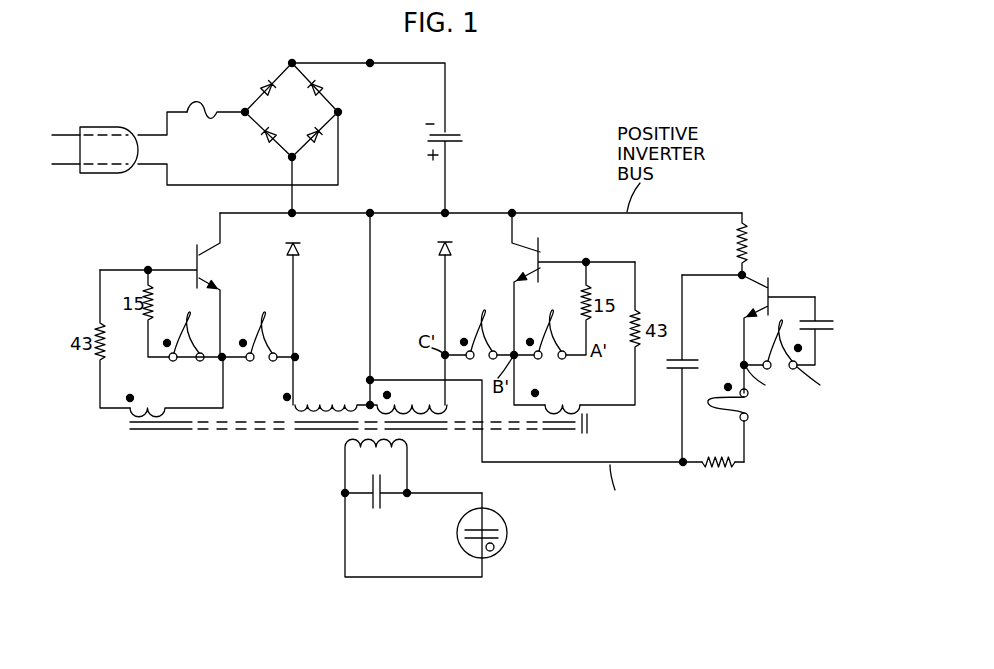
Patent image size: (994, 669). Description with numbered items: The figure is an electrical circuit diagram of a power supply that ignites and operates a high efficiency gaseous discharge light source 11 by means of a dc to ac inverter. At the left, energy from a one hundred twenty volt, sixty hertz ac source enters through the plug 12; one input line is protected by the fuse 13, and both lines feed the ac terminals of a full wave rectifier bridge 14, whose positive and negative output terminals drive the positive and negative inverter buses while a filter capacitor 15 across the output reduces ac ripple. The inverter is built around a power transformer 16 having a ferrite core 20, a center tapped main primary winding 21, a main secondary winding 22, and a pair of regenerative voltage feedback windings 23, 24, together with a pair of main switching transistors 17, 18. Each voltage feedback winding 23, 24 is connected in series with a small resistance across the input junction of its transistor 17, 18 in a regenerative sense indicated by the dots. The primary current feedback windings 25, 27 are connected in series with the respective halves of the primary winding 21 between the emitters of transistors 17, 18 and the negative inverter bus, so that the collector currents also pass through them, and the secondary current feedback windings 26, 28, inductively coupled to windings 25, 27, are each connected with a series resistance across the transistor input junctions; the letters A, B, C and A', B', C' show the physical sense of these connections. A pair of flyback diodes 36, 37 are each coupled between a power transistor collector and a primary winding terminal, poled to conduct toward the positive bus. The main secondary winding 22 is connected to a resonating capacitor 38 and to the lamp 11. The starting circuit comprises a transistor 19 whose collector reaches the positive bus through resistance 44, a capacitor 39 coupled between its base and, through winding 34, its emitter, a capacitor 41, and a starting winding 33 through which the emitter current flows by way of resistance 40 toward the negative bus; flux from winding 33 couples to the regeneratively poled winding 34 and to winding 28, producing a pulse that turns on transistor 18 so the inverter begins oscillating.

The gaseous discharge light source 11 is at (496, 533).
The plug 12 is at (97, 127).
The fuse 13 is at (205, 122).
The full wave rectifier bridge 14 is at (302, 121).
The filter capacitor 15 is at (450, 133).
The power transformer 16 is at (353, 458).
The main switching transistor 17 is at (203, 266).
The main switching transistor 18 is at (537, 262).
The starting transistor 19 is at (766, 297).
The ferrite core 20 is at (150, 431).
The main primary winding 21 is at (293, 408).
The main secondary winding 22 is at (345, 443).
The regenerative voltage feedback winding 23 is at (127, 410).
The regenerative voltage feedback winding 24 is at (565, 408).
The primary current feedback winding 25 is at (262, 330).
The secondary current feedback winding 26 is at (187, 330).
The primary current feedback winding 27 is at (478, 328).
The secondary current feedback winding 28 is at (548, 328).
The starting winding 33 is at (718, 405).
The starting control winding 34 is at (778, 352).
The flyback diode 36 is at (297, 247).
The flyback diode 37 is at (441, 247).
The resonating capacitor 38 is at (387, 470).
The capacitor 39 is at (820, 320).
The resistance 40 is at (703, 464).
The capacitor 41 is at (672, 370).
The resistance 44 is at (736, 240).